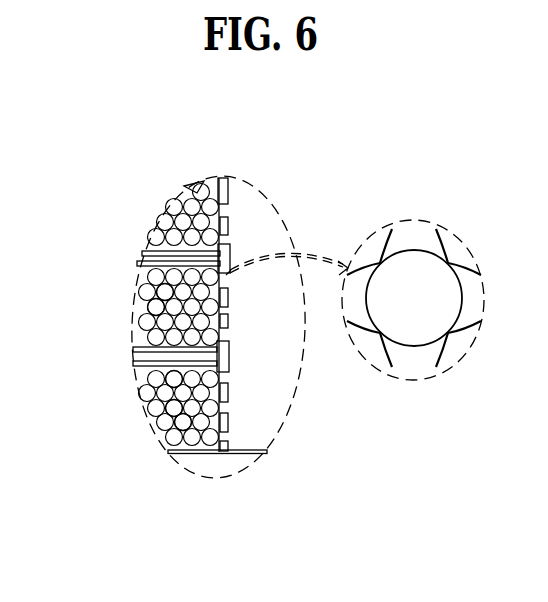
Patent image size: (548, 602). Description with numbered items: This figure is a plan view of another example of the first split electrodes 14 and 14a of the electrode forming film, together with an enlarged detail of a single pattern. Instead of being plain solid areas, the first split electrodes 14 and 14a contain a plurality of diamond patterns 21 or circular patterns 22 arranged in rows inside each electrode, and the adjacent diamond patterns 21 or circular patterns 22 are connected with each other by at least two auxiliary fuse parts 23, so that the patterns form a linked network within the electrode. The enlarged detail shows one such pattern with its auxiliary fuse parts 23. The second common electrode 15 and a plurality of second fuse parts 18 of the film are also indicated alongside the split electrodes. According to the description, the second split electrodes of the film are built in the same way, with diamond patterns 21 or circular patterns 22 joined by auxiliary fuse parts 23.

The first split electrode 14 is at (131, 308).
The first split electrode 14a is at (152, 223).
The second common electrode 15 is at (257, 355).
The second fuse part 18 is at (227, 238).
The diamond pattern 21 is at (163, 286).
The circular pattern 22 is at (205, 200).
The auxiliary fuse part 23 is at (377, 267).